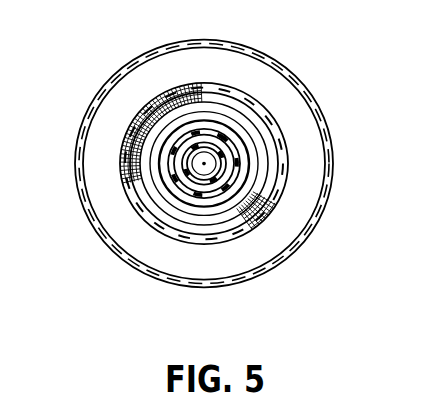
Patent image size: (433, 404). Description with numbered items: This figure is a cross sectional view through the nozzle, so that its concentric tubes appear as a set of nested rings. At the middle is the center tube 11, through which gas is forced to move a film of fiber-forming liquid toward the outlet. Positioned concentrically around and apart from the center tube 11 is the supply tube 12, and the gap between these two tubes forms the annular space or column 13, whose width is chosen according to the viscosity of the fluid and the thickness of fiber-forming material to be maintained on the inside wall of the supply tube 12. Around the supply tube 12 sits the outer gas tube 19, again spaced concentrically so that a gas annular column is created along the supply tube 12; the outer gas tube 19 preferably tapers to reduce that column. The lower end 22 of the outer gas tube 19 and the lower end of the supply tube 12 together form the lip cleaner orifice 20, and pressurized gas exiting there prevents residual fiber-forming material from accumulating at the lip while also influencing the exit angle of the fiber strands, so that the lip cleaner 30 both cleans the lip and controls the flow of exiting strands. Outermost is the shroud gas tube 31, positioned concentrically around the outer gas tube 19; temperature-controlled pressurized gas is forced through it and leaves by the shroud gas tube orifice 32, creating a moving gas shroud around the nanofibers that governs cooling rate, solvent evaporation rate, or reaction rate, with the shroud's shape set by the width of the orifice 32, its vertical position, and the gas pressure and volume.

The center tube 11 is at (228, 161).
The supply tube 12 is at (236, 153).
The annular space or column 13 is at (220, 128).
The outer gas tube 19 is at (277, 200).
The lip cleaner orifice 20 is at (156, 172).
The lower end of outer gas tube 22 is at (145, 195).
The lip cleaner 30 is at (150, 228).
The shroud gas tube 31 is at (313, 95).
The shroud gas tube orifice 32 is at (253, 243).